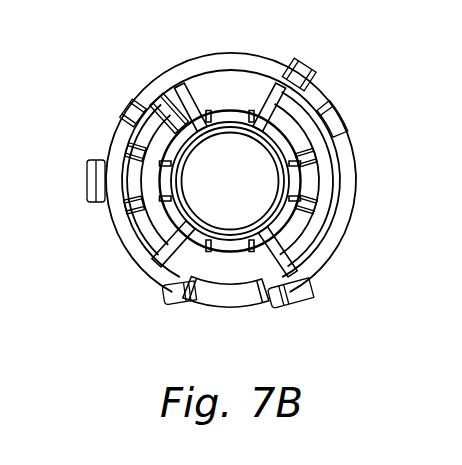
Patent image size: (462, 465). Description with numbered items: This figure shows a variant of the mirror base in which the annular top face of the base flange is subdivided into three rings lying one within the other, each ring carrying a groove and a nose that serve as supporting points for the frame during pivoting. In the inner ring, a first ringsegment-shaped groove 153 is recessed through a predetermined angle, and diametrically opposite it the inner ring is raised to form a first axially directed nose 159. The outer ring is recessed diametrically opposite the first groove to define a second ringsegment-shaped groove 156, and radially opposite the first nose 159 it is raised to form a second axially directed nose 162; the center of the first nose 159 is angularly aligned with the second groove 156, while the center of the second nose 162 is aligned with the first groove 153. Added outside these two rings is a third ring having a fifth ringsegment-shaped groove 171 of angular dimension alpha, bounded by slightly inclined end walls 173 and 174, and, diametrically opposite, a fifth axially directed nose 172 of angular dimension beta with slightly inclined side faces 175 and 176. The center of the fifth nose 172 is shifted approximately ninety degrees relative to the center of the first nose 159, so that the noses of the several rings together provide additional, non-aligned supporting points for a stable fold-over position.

The first ringsegment-shaped groove 153 is at (162, 226).
The second ringsegment-shaped groove 156 is at (322, 212).
The first axially directed nose 159 is at (313, 180).
The second axially directed nose 162 is at (128, 184).
The fifth ringsegment-shaped groove 171 is at (208, 62).
The fifth axially directed nose 172 is at (229, 300).
The end wall 173 is at (326, 97).
The end wall 174 is at (116, 124).
The side face 175 is at (163, 304).
The side face 176 is at (292, 305).